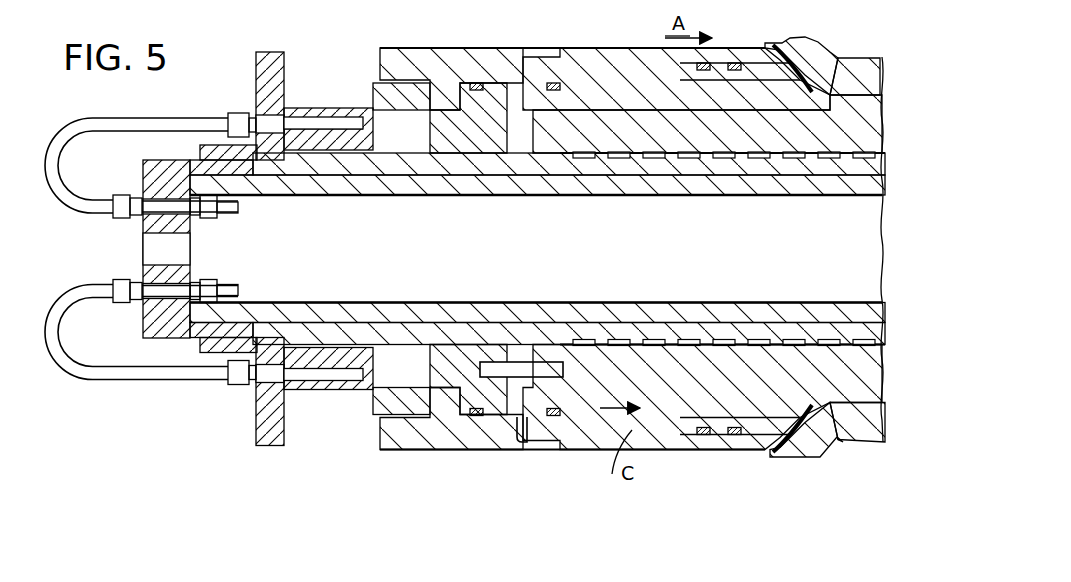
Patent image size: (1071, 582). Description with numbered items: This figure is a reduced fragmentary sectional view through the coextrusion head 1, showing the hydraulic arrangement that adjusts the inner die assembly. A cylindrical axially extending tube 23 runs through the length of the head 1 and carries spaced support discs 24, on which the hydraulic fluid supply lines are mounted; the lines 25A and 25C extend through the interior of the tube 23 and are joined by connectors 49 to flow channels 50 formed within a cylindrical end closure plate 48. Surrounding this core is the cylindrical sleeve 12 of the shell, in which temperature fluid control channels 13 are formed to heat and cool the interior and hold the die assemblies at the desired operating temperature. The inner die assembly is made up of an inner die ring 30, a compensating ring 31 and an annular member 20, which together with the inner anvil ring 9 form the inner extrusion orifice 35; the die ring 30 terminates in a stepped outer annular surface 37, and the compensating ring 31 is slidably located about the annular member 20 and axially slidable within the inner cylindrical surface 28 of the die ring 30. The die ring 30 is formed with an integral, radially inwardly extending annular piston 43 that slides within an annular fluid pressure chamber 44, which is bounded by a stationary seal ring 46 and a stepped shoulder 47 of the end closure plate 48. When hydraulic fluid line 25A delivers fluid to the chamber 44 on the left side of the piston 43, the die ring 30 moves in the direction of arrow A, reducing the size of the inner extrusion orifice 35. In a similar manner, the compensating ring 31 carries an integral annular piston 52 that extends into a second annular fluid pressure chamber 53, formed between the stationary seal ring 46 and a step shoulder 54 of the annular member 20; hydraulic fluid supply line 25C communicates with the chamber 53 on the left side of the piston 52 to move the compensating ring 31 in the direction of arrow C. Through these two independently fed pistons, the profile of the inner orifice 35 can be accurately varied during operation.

The coextrusion head 1 is at (183, 425).
The inner annular anvil ring 9 is at (812, 62).
The cylindrical sleeve 12 is at (463, 323).
The temperature fluid control channels 13 is at (753, 157).
The annular member 20 is at (700, 133).
The cylindrical axially extending tube 23 is at (433, 187).
The support discs 24 is at (145, 232).
The hydraulic fluid supply line 25A is at (133, 125).
The hydraulic fluid supply line 25C is at (125, 373).
The inner cylindrical surface 28 is at (522, 445).
The inner die ring 30 is at (742, 48).
The compensating ring 31 is at (617, 78).
The inner extrusion orifice 35 is at (813, 100).
The stepped outer annular surface 37 is at (778, 45).
The annular piston 43 is at (453, 75).
The annular fluid pressure chamber 44 is at (407, 447).
The stationary seal ring 46 is at (498, 85).
The stepped shoulder 47 is at (415, 97).
The cylindrical end closure plate 48 is at (250, 68).
The connectors 49 is at (233, 372).
The flow channels 50 is at (304, 108).
The annular piston 52 is at (572, 428).
The annular fluid pressure chamber 53 is at (695, 425).
The step shoulder 54 is at (652, 398).